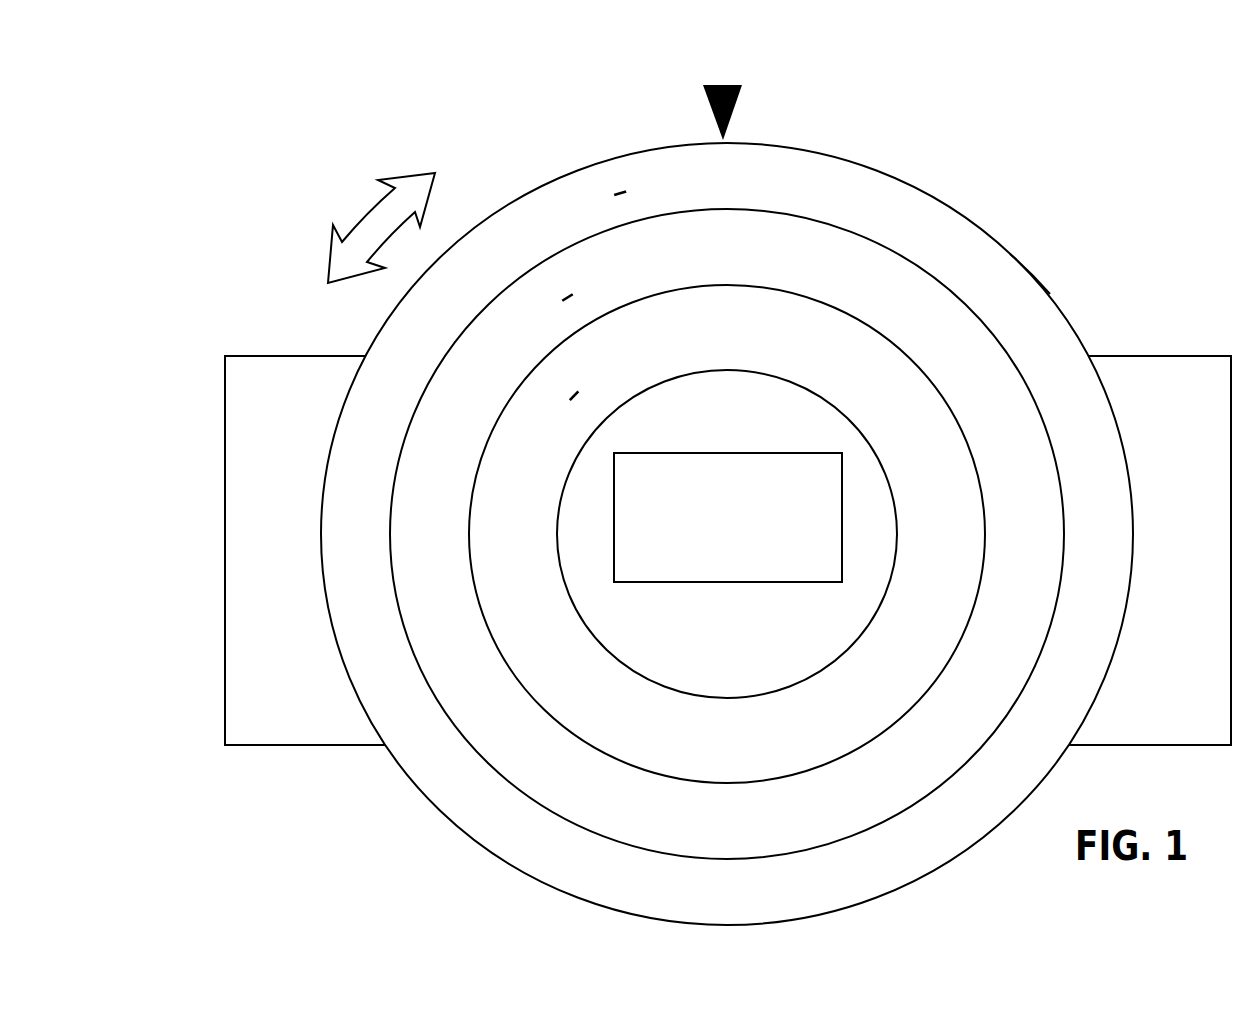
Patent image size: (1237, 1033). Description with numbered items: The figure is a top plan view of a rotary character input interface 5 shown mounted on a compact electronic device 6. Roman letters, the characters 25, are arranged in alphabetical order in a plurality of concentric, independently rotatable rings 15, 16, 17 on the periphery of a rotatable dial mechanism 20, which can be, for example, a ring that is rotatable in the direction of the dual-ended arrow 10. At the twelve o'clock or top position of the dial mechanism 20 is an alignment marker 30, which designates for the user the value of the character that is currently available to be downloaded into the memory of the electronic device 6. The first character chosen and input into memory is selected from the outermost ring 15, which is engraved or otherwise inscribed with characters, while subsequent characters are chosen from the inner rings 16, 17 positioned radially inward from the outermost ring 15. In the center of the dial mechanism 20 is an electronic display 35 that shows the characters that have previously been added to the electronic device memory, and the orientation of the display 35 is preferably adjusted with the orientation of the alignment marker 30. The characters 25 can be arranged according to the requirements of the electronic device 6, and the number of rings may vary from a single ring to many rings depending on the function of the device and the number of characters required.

The character input interface 5 is at (648, 59).
The compact electronic device 6 is at (272, 745).
The dual-ended arrow 10 is at (358, 218).
The outermost ring 15 is at (902, 212).
The inner ring 16 is at (925, 300).
The inner ring 17 is at (922, 418).
The dial mechanism 20 is at (837, 158).
The characters 25 is at (1040, 270).
The alignment marker 30 is at (733, 110).
The display 35 is at (799, 523).